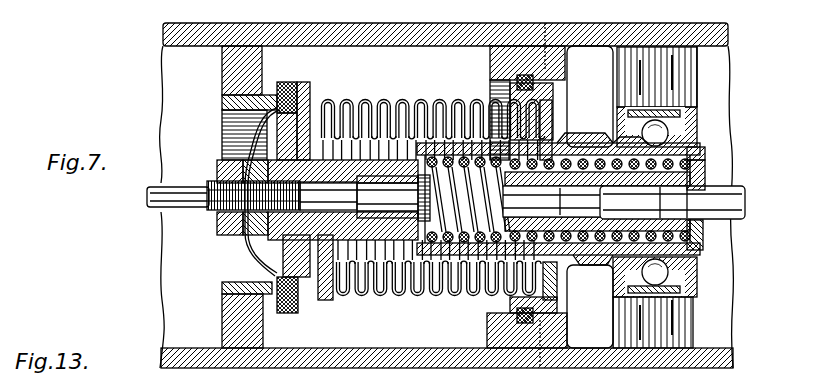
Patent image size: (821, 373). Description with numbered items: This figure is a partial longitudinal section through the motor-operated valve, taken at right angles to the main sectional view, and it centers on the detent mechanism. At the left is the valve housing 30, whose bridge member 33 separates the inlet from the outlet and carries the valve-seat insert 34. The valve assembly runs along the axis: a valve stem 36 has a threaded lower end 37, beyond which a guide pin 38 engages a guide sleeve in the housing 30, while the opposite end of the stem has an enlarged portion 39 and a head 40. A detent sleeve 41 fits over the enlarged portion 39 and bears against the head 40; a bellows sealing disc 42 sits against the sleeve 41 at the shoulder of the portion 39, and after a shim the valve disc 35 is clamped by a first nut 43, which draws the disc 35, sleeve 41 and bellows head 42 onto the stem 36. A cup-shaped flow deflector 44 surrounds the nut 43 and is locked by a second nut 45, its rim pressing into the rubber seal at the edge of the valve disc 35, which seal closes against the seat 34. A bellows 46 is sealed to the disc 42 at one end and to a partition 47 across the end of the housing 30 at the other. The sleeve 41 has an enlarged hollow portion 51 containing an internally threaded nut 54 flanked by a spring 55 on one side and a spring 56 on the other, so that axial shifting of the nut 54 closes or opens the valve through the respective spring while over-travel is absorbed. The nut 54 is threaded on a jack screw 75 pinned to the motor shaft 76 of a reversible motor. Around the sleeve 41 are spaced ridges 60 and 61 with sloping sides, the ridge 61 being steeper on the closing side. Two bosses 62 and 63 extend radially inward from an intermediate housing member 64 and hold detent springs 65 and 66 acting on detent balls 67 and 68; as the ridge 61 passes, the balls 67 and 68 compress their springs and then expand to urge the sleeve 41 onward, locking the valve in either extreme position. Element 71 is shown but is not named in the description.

The valve housing 30 is at (402, 32).
The bridge member 33 is at (240, 314).
The valve-seat insert 34 is at (222, 286).
The valve disc 35 is at (308, 100).
The valve stem 36 is at (328, 196).
The threaded lower end 37 is at (213, 208).
The guide pin 38 is at (147, 201).
The enlarged portion 39 is at (402, 285).
The head 40 is at (428, 193).
The detent sleeve 41 is at (370, 174).
The bellows sealing disc 42 is at (327, 297).
The first nut 43 is at (240, 236).
The flow deflector 44 is at (250, 237).
The second nut 45 is at (217, 163).
The bellows 46 is at (410, 102).
The partition 47 is at (547, 107).
The enlarged hollow portion 51 is at (697, 147).
The internally threaded nut 54 is at (557, 243).
The spring 55 is at (484, 203).
The spring 56 is at (705, 164).
The ridge 60 is at (583, 138).
The ridge 61 is at (625, 140).
The boss 62 is at (661, 57).
The boss 63 is at (682, 335).
The intermediate housing member 64 is at (610, 30).
The detent spring 65 is at (668, 109).
The detent spring 66 is at (657, 298).
The detent ball 67 is at (653, 112).
The detent ball 68 is at (643, 297).
The valve block 71 is at (685, 137).
The jack screw 75 is at (584, 243).
The motor shaft 76 is at (737, 187).